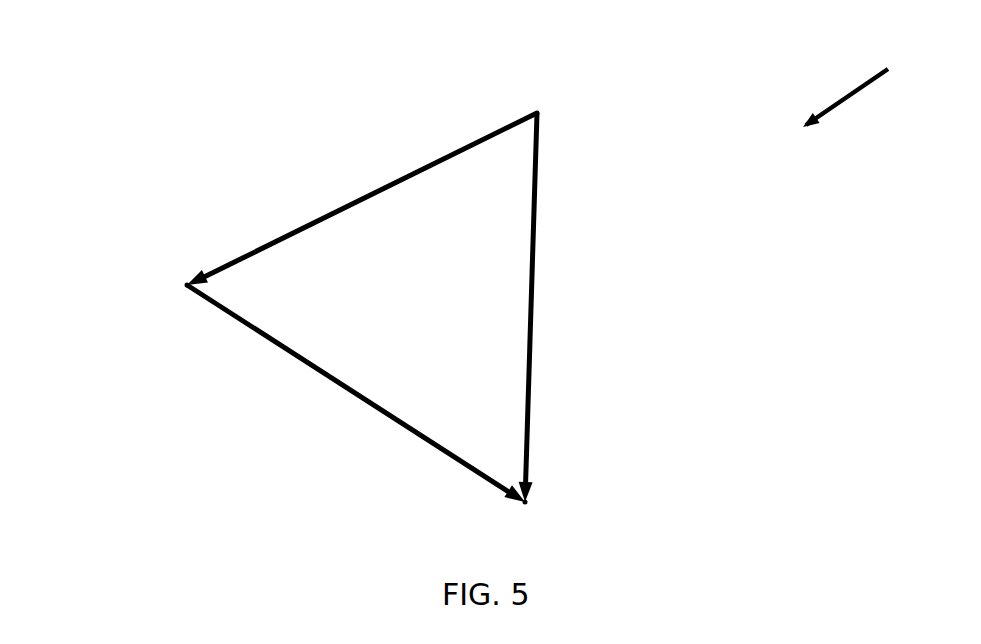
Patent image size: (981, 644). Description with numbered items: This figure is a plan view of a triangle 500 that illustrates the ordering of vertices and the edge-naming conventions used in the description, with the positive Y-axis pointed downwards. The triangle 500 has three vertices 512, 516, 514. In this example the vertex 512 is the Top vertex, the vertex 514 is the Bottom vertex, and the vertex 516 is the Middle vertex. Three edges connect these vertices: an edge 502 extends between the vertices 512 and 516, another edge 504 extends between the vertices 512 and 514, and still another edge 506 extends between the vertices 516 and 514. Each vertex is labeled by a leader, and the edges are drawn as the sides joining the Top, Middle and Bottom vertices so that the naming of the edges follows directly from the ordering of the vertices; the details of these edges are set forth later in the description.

The triangle 500 is at (927, 60).
The edge 502 is at (430, 167).
The edge 504 is at (529, 380).
The edge 506 is at (360, 400).
The vertex 512 is at (537, 113).
The vertex 514 is at (525, 502).
The vertex 516 is at (187, 285).